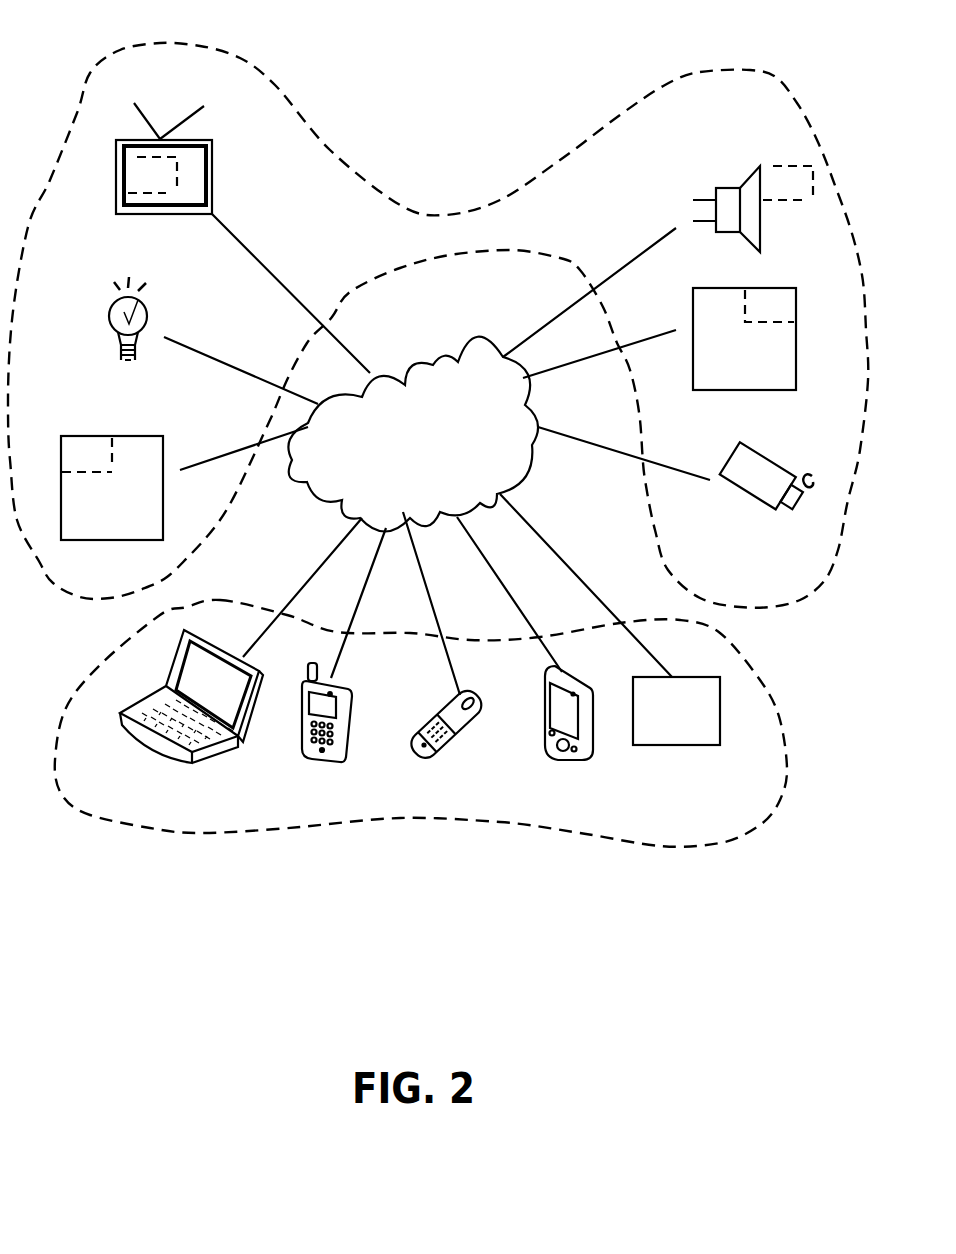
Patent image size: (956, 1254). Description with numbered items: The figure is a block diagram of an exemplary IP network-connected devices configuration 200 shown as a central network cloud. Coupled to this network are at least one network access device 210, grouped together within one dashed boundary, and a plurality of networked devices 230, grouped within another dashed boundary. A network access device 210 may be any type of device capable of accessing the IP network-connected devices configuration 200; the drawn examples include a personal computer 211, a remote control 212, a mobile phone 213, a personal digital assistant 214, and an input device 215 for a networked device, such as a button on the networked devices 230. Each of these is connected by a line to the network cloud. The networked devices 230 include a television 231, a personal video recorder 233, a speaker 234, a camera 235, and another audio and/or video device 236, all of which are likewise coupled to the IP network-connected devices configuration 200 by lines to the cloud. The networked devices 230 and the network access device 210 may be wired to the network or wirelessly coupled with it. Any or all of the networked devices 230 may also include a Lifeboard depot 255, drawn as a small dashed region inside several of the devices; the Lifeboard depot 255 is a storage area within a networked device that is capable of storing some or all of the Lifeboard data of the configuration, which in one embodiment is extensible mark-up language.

The IP network-connected devices configuration 200 is at (406, 346).
The network access device 210 is at (780, 723).
The personal computer 211 is at (175, 790).
The remote control 212 is at (307, 798).
The mobile phone 213 is at (425, 796).
The personal digital assistant 214 is at (554, 793).
The input device 215 is at (657, 775).
The networked devices 230 is at (778, 73).
The television 231 is at (143, 258).
The personal video recorder 233 is at (93, 571).
The speaker 234 is at (108, 396).
The camera 235 is at (725, 525).
The other audio and/or video device 236 is at (725, 421).
The Lifeboard depot 255 is at (135, 187).